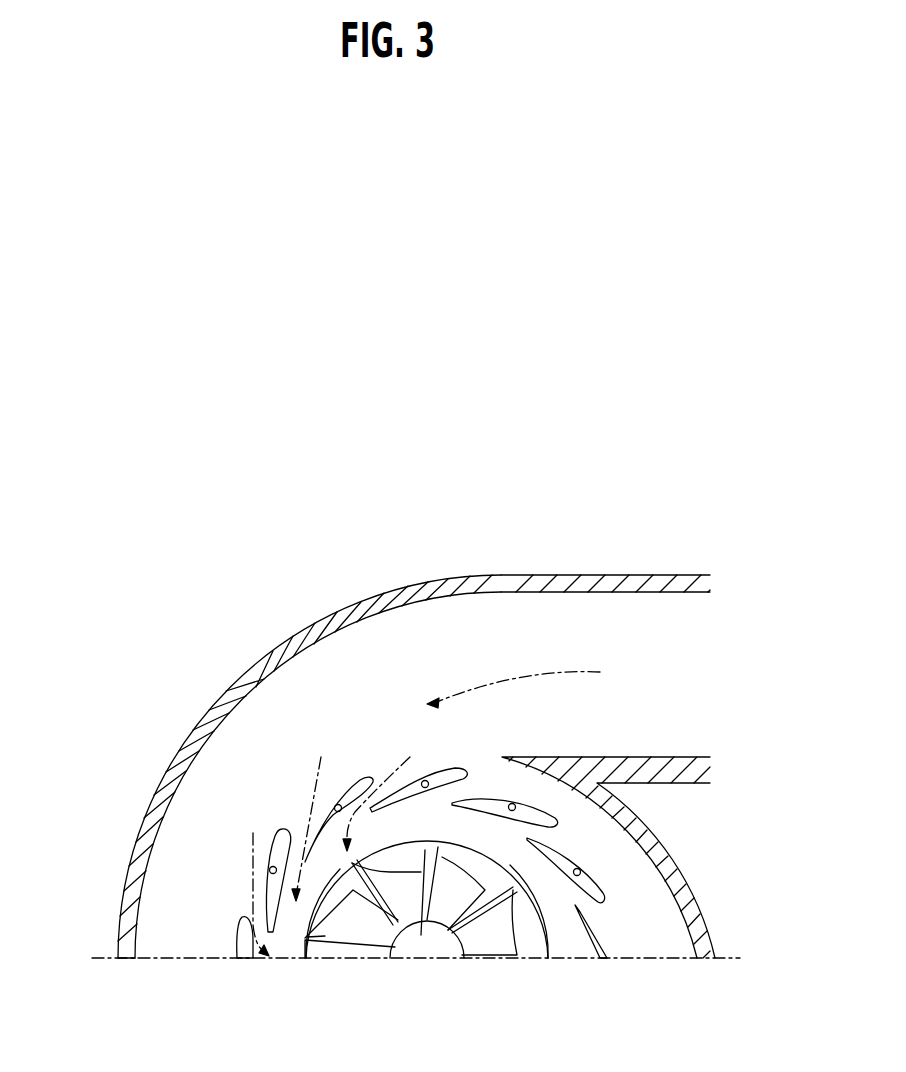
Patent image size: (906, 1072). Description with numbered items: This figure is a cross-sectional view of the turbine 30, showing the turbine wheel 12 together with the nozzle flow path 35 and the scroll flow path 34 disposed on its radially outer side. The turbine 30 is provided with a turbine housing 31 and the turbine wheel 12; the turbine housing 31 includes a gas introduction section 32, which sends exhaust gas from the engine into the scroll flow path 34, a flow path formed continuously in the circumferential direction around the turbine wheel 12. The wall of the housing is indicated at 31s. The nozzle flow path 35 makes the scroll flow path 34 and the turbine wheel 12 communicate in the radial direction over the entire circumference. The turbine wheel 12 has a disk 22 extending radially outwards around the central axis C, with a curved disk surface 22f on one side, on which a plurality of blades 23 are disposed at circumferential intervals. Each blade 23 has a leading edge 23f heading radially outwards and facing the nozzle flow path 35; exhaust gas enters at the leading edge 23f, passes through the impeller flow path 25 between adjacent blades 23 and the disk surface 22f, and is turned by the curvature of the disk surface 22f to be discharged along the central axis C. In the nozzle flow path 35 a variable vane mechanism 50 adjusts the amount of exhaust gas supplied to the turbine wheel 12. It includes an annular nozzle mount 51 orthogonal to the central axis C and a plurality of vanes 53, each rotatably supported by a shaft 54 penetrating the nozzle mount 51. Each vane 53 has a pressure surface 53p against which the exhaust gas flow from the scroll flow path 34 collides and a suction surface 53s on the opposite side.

The turbine wheel 12 is at (302, 950).
The disk 22 is at (528, 930).
The disk surface 22f is at (323, 913).
The blade 23 is at (357, 930).
The leading edge 23f is at (415, 843).
The impeller flow path 25 is at (398, 915).
The turbine 30 is at (550, 570).
The turbine housing 31 is at (430, 577).
The casing inner surface 31s is at (347, 603).
The gas introduction section 32 is at (680, 594).
The scroll flow path 34 is at (250, 723).
The nozzle flow path 35 is at (412, 772).
The variable vane mechanism 50 is at (258, 865).
The nozzle mount 51 is at (165, 914).
The vane 53 is at (288, 850).
The suction surface 53s is at (312, 813).
The pressure surface 53p is at (305, 862).
The shaft 54 is at (337, 803).
The central axis C is at (427, 964).